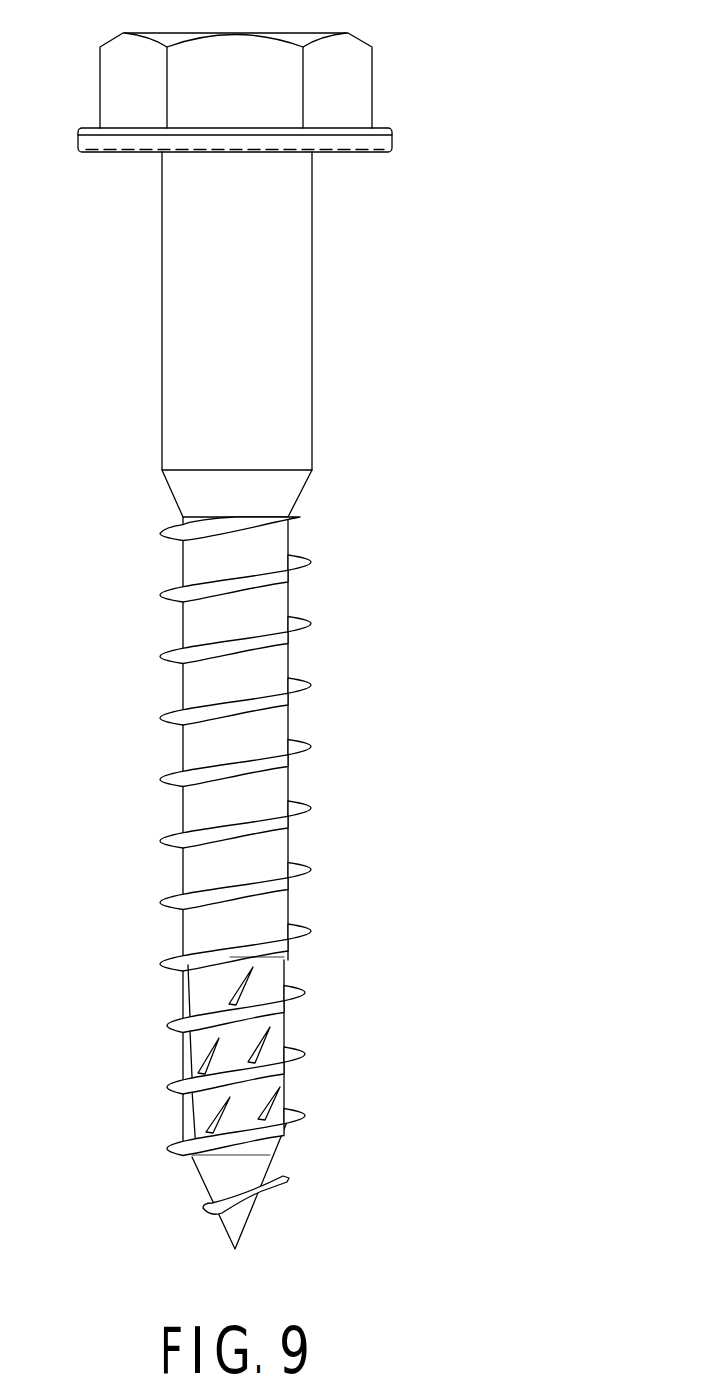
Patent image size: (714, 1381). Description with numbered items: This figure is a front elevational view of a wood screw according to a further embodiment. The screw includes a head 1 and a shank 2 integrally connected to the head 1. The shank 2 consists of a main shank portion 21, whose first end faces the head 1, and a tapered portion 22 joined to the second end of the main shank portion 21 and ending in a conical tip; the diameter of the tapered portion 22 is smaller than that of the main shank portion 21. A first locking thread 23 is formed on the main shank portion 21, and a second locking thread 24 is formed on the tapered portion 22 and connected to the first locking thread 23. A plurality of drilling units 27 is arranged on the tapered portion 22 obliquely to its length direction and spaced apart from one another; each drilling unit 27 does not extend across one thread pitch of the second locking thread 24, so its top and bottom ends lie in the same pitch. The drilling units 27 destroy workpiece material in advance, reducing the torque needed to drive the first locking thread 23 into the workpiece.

The head 1 is at (351, 80).
The shank 2 is at (223, 700).
The main shank portion 21 is at (240, 744).
The tapered portion 22 is at (272, 1043).
The first locking thread 23 is at (178, 841).
The second locking thread 24 is at (178, 1089).
The drilling unit 27 is at (215, 1113).